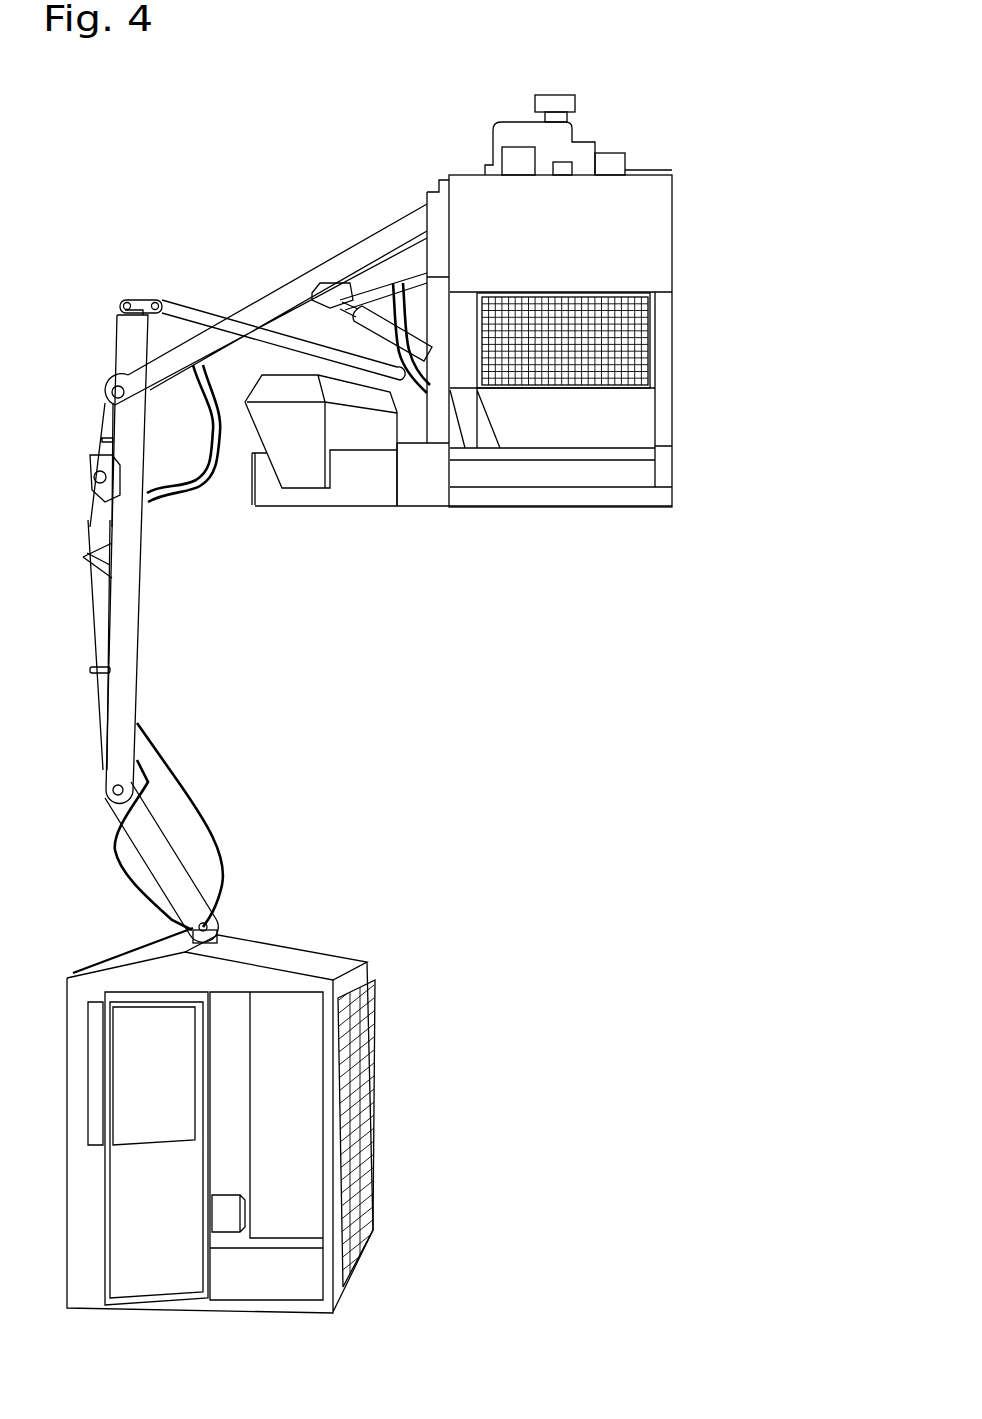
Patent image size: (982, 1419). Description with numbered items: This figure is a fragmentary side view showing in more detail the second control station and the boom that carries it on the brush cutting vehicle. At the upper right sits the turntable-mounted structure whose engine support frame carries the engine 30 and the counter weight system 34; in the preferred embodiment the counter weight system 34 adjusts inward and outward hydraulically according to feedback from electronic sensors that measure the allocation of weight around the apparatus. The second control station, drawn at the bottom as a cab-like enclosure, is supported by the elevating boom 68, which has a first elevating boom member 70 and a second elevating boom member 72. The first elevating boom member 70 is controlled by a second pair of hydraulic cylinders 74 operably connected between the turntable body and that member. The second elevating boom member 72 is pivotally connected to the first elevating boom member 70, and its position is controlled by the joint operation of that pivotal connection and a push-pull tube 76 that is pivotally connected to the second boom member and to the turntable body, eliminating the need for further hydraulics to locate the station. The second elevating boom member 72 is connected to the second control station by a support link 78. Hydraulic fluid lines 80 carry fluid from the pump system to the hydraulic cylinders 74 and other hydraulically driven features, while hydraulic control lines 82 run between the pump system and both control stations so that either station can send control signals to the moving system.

The engine 30 is at (583, 142).
The counter weight system 34 is at (370, 490).
The elevating boom 68 is at (326, 259).
The first elevating boom member 70 is at (287, 300).
The second elevating boom member 72 is at (120, 620).
The hydraulic cylinders 74 is at (370, 320).
The push-pull tube 76 is at (183, 310).
The support link 78 is at (187, 895).
The hydraulic fluid lines 80 is at (428, 290).
The hydraulic control lines 82 is at (183, 780).